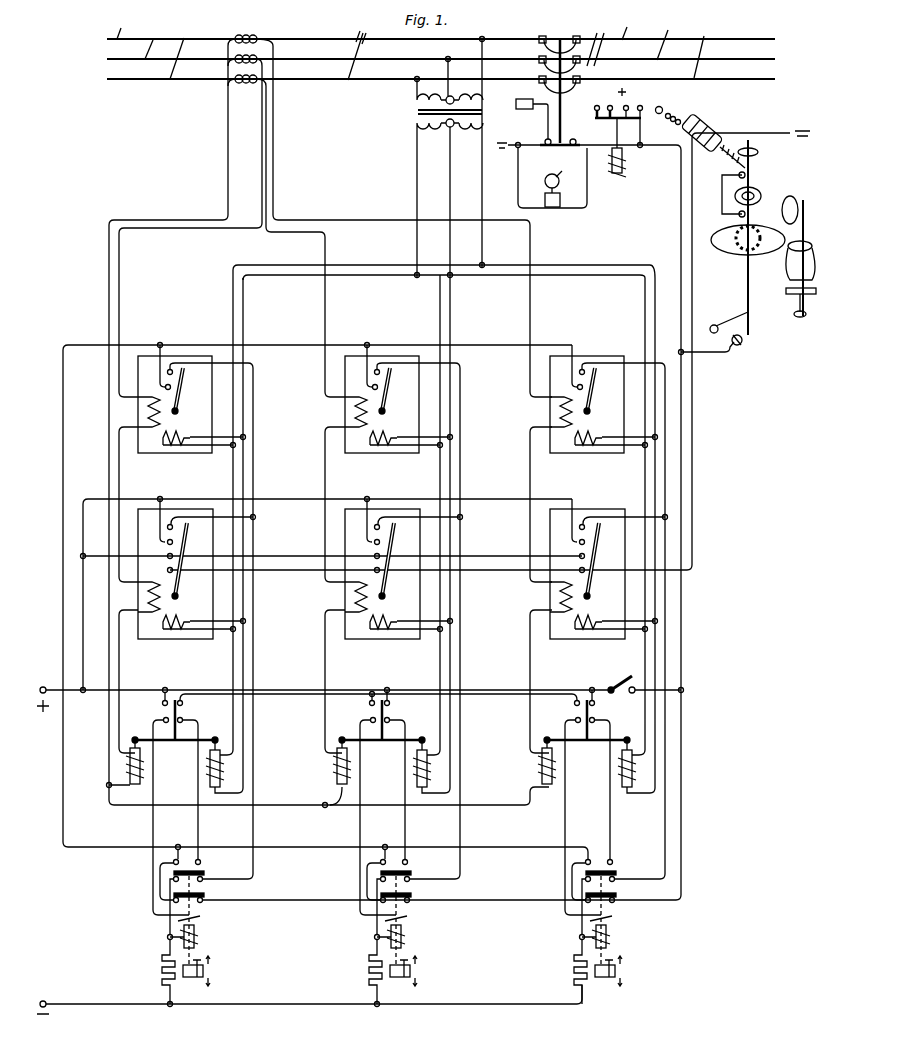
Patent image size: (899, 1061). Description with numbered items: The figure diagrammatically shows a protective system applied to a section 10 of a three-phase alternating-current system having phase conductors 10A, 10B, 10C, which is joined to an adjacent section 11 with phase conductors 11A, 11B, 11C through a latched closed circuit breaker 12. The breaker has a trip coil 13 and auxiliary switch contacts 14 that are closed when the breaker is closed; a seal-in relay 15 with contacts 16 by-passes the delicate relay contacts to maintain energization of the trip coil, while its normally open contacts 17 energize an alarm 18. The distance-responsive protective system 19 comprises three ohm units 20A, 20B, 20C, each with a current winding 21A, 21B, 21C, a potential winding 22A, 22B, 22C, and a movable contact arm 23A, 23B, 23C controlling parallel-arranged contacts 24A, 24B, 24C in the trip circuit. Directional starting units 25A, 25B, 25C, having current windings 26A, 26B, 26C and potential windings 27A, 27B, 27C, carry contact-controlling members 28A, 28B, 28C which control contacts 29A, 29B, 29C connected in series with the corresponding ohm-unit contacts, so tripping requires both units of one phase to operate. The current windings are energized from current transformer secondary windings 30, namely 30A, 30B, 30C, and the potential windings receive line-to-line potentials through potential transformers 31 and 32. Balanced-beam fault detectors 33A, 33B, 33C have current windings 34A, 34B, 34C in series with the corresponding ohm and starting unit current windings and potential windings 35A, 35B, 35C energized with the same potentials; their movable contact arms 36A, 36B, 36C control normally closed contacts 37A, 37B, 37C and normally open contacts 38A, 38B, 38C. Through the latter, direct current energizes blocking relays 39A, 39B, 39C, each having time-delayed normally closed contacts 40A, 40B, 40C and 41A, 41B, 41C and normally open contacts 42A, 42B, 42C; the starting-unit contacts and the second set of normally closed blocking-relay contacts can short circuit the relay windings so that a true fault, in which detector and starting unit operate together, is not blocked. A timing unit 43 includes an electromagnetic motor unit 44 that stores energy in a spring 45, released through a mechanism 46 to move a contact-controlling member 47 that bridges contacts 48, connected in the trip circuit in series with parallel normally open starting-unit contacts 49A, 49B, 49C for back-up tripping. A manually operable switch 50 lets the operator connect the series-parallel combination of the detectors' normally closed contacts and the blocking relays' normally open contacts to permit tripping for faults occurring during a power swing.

The section of three-phase alternating-current system 10 is at (627, 46).
The phase conductor 10A is at (632, 27).
The phase conductor 10B is at (671, 36).
The phase conductor 10C is at (708, 46).
The section of alternating-current system 11 is at (293, 47).
The phase conductor 11A is at (123, 26).
The phase conductor 11B is at (159, 36).
The phase conductor 11C is at (190, 47).
The circuit breaker 12 is at (559, 40).
The trip coil 13 is at (521, 99).
The contacts of "a" auxiliary switch 14 is at (568, 140).
The seal-in relay 15 is at (624, 163).
The contacts of seal-in relay 16 is at (641, 105).
The normally open contacts 17 is at (597, 105).
The alarm 18 is at (546, 196).
The distance-responsive protective system 19 is at (387, 307).
The ohm unit 20A is at (587, 386).
The ohm unit 20B is at (382, 386).
The ohm unit 20C is at (188, 356).
The current winding 21A is at (563, 423).
The current winding 21B is at (358, 423).
The current winding 21C is at (156, 425).
The potential winding 22A is at (615, 424).
The potential winding 22B is at (410, 424).
The potential winding 22C is at (188, 430).
The movable contact arm 23A is at (604, 391).
The movable contact arm 23B is at (399, 391).
The movable contact arm 23C is at (179, 392).
The contacts 24A is at (606, 371).
The contacts 24B is at (401, 371).
The contacts 24C is at (165, 387).
The starting unit 25A is at (587, 558).
The starting unit 25B is at (382, 558).
The starting unit 25C is at (181, 509).
The current winding 26A is at (563, 609).
The current winding 26B is at (358, 609).
The current winding 26C is at (155, 611).
The potential winding 27A is at (615, 608).
The potential winding 27B is at (410, 608).
The potential winding 27C is at (187, 614).
The movable contact-controlling member 28A is at (605, 561).
The movable contact-controlling member 28B is at (400, 561).
The movable contact-controlling member 28C is at (184, 548).
The contacts 29A is at (609, 526).
The contacts 29B is at (404, 526).
The contacts 29C is at (166, 543).
The current transformer secondary windings 30 is at (330, 406).
The current transformer secondary winding 30A is at (252, 34).
The current transformer secondary winding 30B is at (264, 56).
The current transformer secondary winding 30C is at (247, 83).
The potential transformer 31 is at (414, 109).
The potential transformer 32 is at (483, 112).
The fault detector 33A is at (587, 736).
The fault detector 33B is at (382, 736).
The fault detector 33C is at (186, 743).
The current winding 34A is at (529, 762).
The current winding 34B is at (327, 763).
The current winding 34C is at (143, 779).
The potential winding 35A is at (636, 778).
The potential winding 35B is at (433, 773).
The potential winding 35C is at (215, 788).
The movable contact arm 36A is at (615, 722).
The movable contact arm 36B is at (410, 722).
The movable contact arm 36C is at (184, 718).
The normally closed contacts 37A is at (609, 703).
The normally closed contacts 37B is at (404, 703).
The normally closed contacts 37C is at (183, 703).
The normally open contacts 38A is at (562, 711).
The normally open contacts 38B is at (357, 711).
The normally open contacts 38C is at (163, 718).
The blocking relay 39A is at (607, 940).
The blocking relay 39B is at (402, 940).
The blocking relay 39C is at (196, 939).
The normally closed contacts 40A is at (608, 892).
The normally closed contacts 40B is at (403, 892).
The normally closed contacts 40C is at (203, 902).
The normally closed contacts 41A is at (621, 903).
The normally closed contacts 41B is at (416, 903).
The normally closed contacts 41C is at (204, 881).
The normally open contacts 42A is at (615, 856).
The normally open contacts 42B is at (412, 860).
The normally open contacts 42C is at (201, 862).
The timing unit 43 is at (736, 224).
The electromagnetic motor unit 44 is at (704, 122).
The spring 45 is at (755, 193).
The mechanism 46 is at (740, 256).
The movable contact-controlling member 47 is at (714, 325).
The contacts 48 is at (744, 343).
The normally open contacts 49A is at (601, 561).
The normally open contacts 49B is at (364, 567).
The normally open contacts 49C is at (167, 570).
The manually operable switch 50 is at (622, 680).